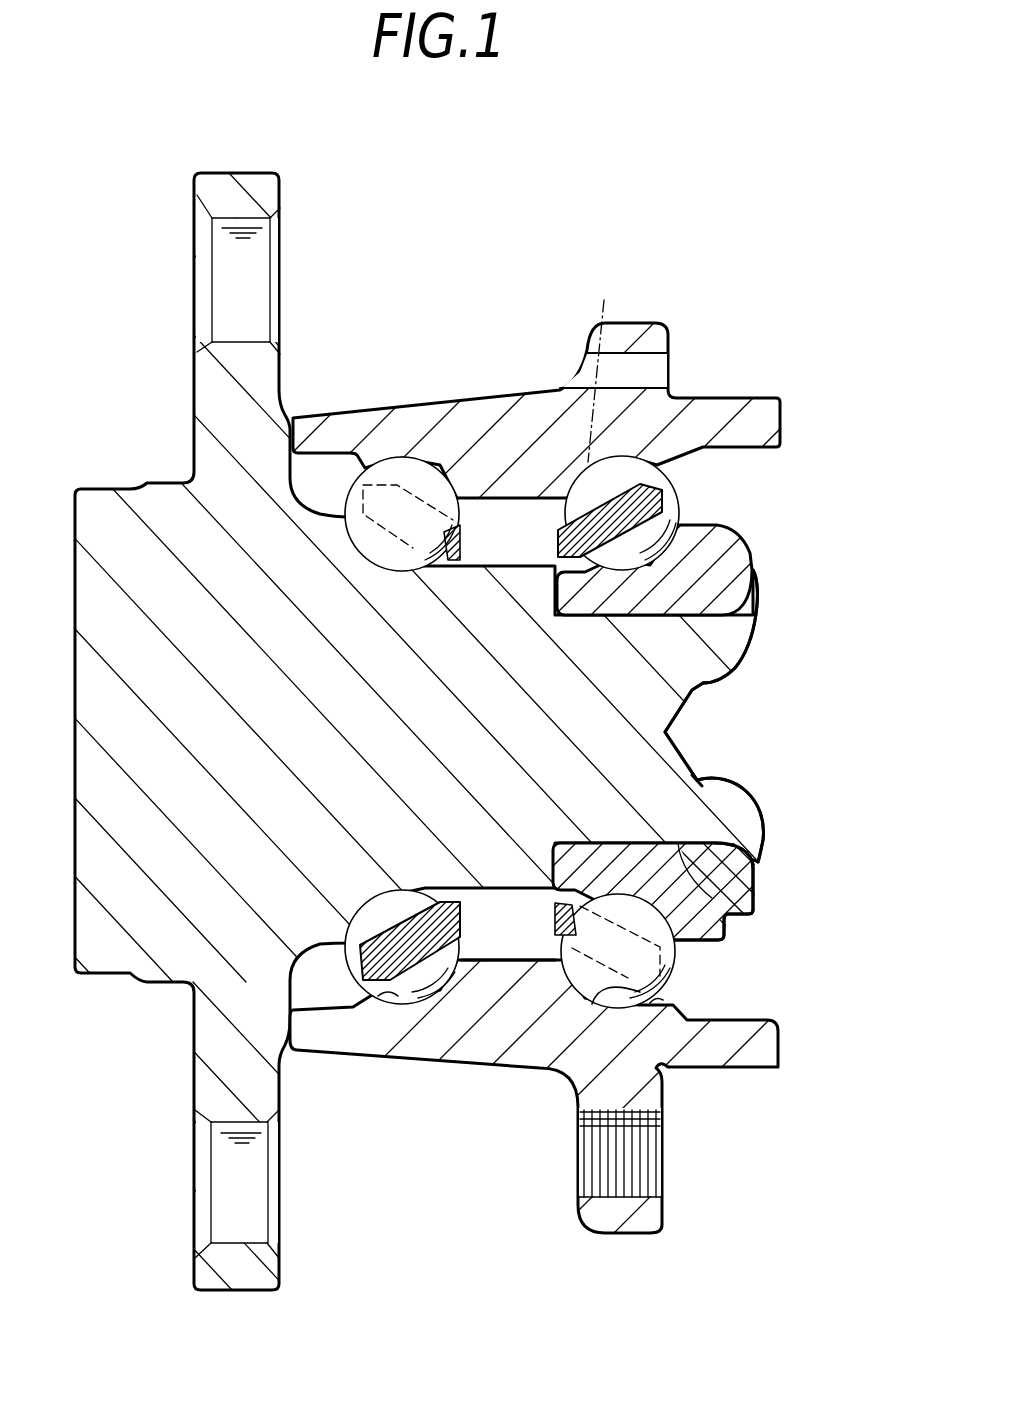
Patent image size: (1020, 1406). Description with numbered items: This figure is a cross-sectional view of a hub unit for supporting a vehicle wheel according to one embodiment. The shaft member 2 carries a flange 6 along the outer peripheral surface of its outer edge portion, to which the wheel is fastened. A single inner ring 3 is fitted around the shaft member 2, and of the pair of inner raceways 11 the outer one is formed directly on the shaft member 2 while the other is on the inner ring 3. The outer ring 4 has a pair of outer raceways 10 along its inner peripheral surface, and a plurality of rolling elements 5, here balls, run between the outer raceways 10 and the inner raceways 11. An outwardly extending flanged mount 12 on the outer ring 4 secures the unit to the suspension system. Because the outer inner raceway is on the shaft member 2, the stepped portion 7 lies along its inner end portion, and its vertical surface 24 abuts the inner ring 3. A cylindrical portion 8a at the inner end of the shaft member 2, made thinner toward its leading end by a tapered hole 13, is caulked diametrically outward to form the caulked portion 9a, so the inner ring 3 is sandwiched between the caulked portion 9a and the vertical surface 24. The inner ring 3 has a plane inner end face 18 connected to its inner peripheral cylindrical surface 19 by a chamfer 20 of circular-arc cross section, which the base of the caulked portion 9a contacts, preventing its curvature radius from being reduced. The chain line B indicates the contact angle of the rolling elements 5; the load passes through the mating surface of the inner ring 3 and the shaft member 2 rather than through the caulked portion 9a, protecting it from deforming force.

The shaft member 2 is at (468, 880).
The inner ring 3 is at (713, 547).
The outer ring 4 is at (492, 415).
The rolling elements 5 is at (417, 468).
The flange 6 is at (221, 178).
The stepped portion 7 is at (740, 922).
The cylindrical portion 8a is at (733, 807).
The caulked portion 9a is at (743, 630).
The outer raceways 10 is at (380, 993).
The inner raceways 11 is at (376, 557).
The flanged mount 12 is at (650, 1213).
The tapered hole 13 is at (703, 690).
The inner end face 18 is at (757, 898).
The inner peripheral cylindrical surface 19 is at (697, 780).
The chamfer 20 is at (762, 863).
The vertical surface 24 is at (553, 890).
The chain line B is at (602, 368).